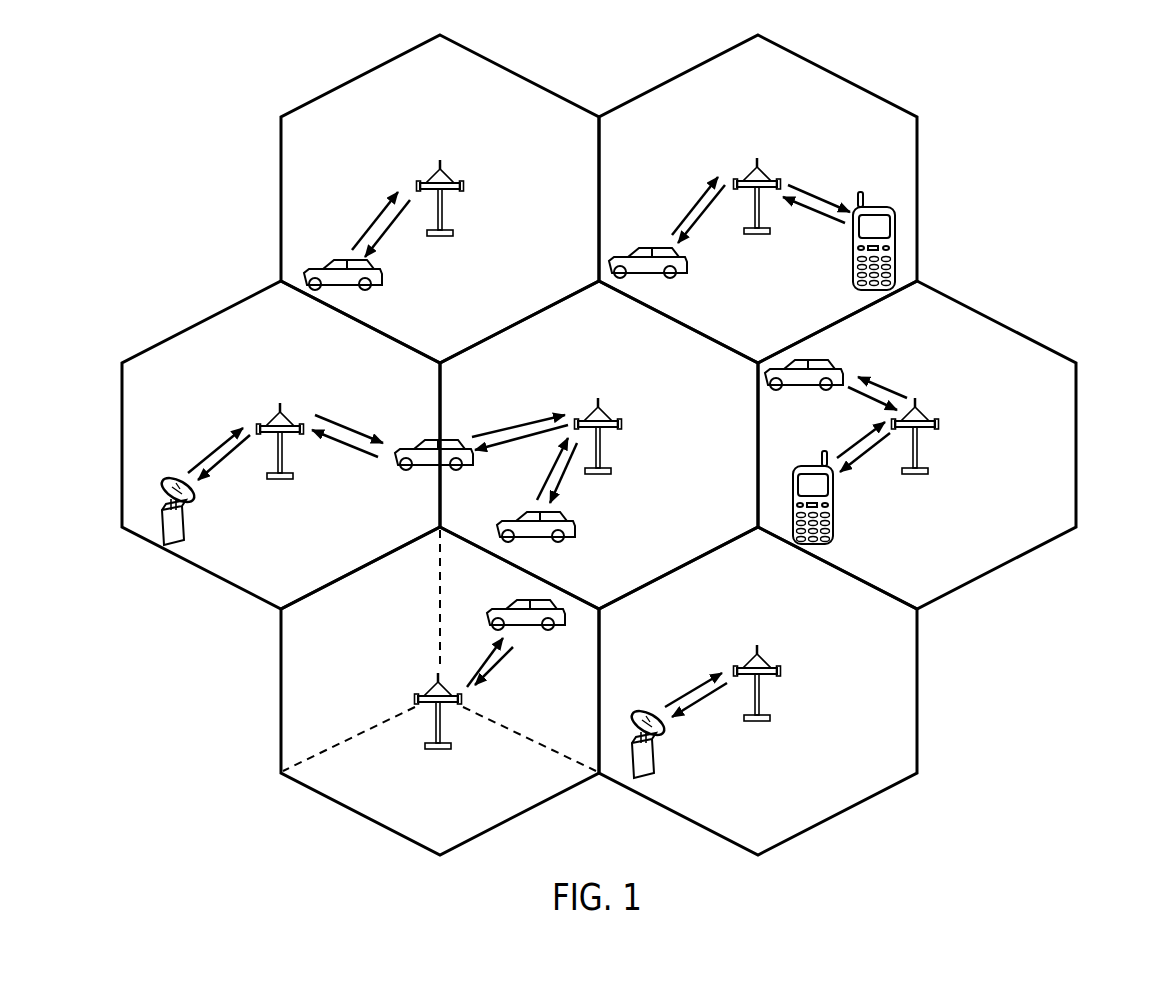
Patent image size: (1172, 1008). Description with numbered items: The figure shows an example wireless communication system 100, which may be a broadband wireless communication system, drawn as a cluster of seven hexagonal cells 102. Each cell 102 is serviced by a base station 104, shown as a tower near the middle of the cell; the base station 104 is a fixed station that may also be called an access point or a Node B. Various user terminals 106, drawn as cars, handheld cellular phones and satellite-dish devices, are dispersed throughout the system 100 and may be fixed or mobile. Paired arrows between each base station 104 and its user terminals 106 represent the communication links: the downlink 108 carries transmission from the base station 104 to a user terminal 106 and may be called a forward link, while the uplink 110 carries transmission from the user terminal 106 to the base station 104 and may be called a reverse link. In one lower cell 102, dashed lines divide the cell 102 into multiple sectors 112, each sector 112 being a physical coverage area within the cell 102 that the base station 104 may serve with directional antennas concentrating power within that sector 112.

The wireless communication system 100 is at (1062, 121).
The cell 102 is at (370, 71).
The base station 104 is at (440, 160).
The user terminal 106 is at (381, 281).
The downlink 108 is at (386, 240).
The uplink 110 is at (375, 220).
The sector 112 is at (495, 810).